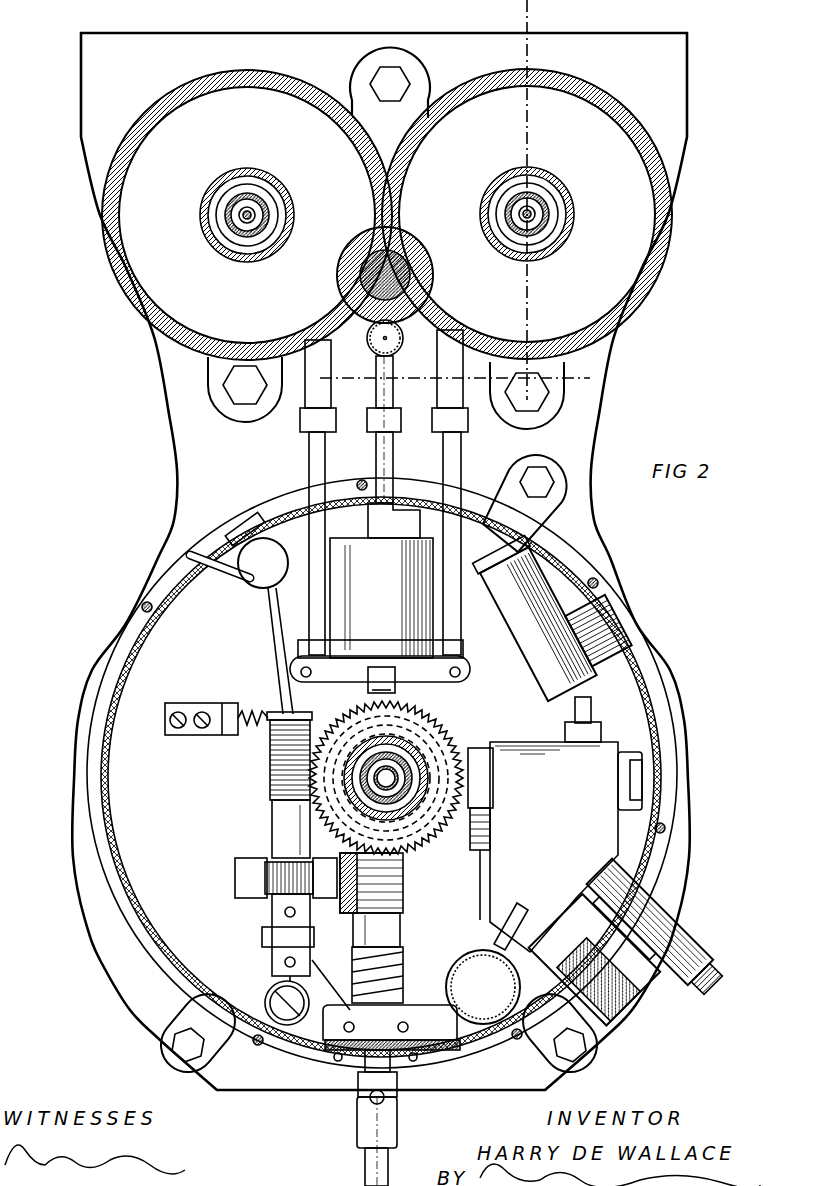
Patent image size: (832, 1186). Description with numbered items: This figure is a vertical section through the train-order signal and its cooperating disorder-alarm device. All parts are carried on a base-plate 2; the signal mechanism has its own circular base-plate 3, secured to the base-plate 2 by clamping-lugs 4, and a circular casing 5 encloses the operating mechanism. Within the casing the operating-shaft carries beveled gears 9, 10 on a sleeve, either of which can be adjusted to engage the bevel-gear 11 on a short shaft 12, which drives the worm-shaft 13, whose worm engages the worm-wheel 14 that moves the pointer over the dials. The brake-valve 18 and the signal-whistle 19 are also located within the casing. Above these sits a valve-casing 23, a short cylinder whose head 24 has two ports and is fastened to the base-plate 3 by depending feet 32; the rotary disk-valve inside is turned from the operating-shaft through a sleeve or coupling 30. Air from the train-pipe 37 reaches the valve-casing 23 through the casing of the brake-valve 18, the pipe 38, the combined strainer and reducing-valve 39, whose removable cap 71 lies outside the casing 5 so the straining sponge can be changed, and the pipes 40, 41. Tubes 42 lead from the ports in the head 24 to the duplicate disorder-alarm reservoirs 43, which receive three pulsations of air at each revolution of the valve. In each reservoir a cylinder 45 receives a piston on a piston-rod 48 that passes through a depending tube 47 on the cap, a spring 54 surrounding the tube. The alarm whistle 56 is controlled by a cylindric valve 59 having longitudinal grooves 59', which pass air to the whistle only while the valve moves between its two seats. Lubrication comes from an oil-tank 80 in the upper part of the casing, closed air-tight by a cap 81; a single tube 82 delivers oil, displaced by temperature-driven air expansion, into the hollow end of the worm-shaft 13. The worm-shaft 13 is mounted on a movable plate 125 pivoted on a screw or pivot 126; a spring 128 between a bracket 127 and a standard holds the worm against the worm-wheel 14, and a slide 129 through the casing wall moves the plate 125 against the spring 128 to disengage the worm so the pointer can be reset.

The base-plate 2 is at (590, 442).
The independent base-plate 3 is at (455, 200).
The clamping-lugs 4 is at (188, 1013).
The casing 5 is at (112, 700).
The beveled gear 9 is at (403, 905).
The beveled gear 10 is at (405, 853).
The bevel-gear 11 is at (350, 896).
The short shaft 12 is at (268, 872).
The worm-shaft 13 is at (282, 828).
The worm-wheel 14 is at (438, 723).
The brake-valve 18 is at (555, 847).
The signal-whistle 19 is at (481, 953).
The valve-casing 23 is at (381, 598).
The head 24 is at (380, 648).
The sleeve or coupling 30 is at (397, 685).
The depending lugs or feet 32 is at (337, 676).
The train-pipe 37 is at (700, 966).
The pipe 38 is at (591, 712).
The reducing-valve 39 is at (524, 630).
The pipe 40 is at (520, 524).
The pipe 41 is at (394, 400).
The pipes or tubes 42 is at (316, 452).
The disorder-alarm reservoirs 43 is at (386, 393).
The cylinder 45 is at (294, 215).
The depending tube 47 is at (270, 232).
The piston-rod 48 is at (249, 222).
The spring 54 is at (293, 200).
The whistle 56 is at (388, 352).
The valve 59 is at (410, 275).
The longitudinal grooves 59' is at (426, 275).
The removable cap 71 is at (625, 640).
The oil-tank 80 is at (258, 578).
The cap 81 is at (240, 521).
The tube 82 is at (275, 650).
The movable plate 125 is at (270, 760).
The screw or pivot 126 is at (275, 1000).
The bracket 127 is at (202, 712).
The spring 128 is at (258, 716).
The slide 129 is at (190, 553).